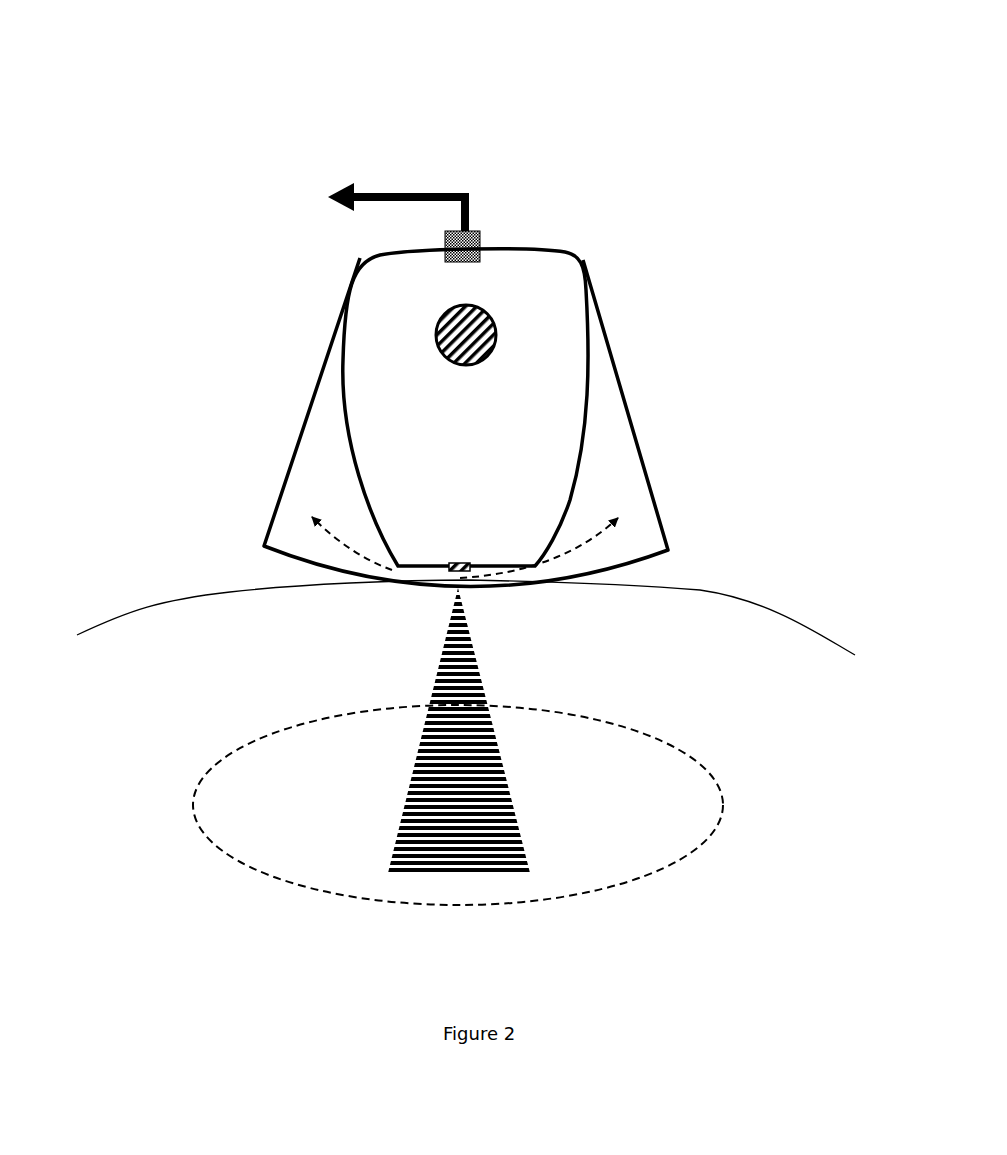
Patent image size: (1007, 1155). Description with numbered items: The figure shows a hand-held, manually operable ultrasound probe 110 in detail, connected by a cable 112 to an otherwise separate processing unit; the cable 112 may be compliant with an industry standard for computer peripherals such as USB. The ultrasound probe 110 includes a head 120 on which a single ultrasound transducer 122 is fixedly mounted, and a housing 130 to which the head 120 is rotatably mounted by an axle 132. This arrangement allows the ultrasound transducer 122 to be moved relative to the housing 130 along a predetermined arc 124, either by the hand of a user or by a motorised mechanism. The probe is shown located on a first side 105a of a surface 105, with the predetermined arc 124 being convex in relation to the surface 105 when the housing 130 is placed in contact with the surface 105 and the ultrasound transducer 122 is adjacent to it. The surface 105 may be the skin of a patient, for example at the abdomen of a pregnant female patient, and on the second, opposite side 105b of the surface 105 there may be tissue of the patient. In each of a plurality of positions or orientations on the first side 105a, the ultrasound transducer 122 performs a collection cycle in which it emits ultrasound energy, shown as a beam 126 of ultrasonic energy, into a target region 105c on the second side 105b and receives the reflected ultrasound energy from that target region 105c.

The ultrasound probe 110 is at (210, 109).
The cable 112 is at (425, 197).
The head 120 is at (586, 437).
The ultrasound transducer 122 is at (470, 563).
The predetermined arc 124 is at (595, 538).
The beam of ultrasonic energy 126 is at (460, 685).
The housing 130 is at (318, 388).
The axle 132 is at (495, 322).
The surface 105 is at (180, 599).
The first side of the surface 105a is at (177, 573).
The second side of the surface 105b is at (185, 631).
The target region 105c is at (712, 772).